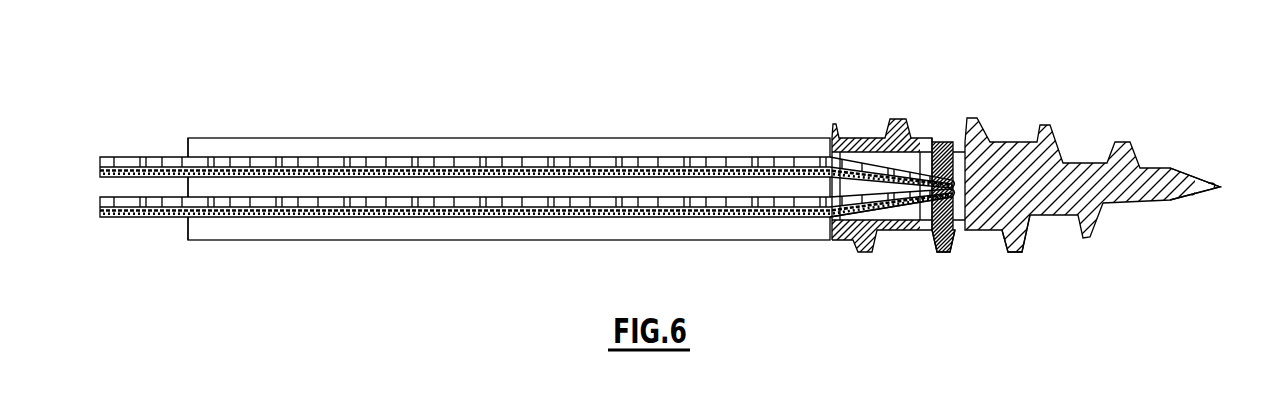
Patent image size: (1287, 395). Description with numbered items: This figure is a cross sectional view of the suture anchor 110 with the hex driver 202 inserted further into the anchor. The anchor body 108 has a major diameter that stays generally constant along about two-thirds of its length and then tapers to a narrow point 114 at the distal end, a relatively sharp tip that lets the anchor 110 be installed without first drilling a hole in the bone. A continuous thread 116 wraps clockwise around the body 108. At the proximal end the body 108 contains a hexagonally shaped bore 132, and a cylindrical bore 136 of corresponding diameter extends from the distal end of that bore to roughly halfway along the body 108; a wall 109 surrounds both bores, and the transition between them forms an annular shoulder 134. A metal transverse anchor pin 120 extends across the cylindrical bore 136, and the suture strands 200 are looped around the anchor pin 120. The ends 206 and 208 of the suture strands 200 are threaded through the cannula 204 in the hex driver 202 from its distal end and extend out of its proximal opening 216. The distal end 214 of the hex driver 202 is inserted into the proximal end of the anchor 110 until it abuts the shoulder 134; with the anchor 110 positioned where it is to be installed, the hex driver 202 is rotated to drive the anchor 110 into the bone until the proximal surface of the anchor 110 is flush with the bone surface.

The hex driver 202 is at (513, 53).
The cannula 204 is at (619, 138).
The proximal opening 216 is at (188, 145).
The suture strands 200 is at (677, 157).
The end of suture strand 206 is at (100, 170).
The end of suture strand 208 is at (100, 212).
The suture anchor 110 is at (1135, 88).
The hexagonally shaped bore 132 is at (875, 146).
The wall 109 is at (855, 147).
The cylindrical bore 136 is at (927, 157).
The metal transverse anchor pin 120 is at (945, 150).
The annular shoulder 134 is at (910, 207).
The distal end of hex driver 214 is at (895, 213).
The anchor body 108 is at (1005, 145).
The continuous thread 116 is at (1020, 242).
The narrow point 114 is at (1213, 183).